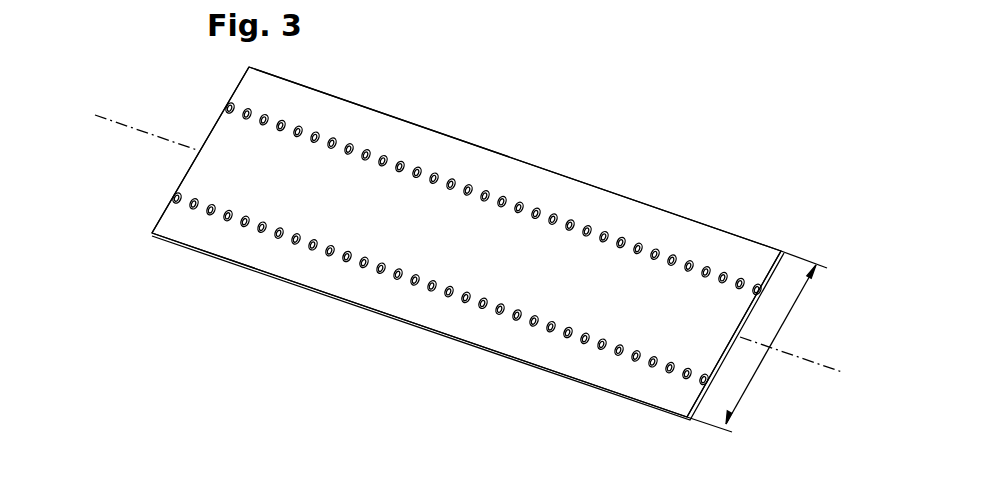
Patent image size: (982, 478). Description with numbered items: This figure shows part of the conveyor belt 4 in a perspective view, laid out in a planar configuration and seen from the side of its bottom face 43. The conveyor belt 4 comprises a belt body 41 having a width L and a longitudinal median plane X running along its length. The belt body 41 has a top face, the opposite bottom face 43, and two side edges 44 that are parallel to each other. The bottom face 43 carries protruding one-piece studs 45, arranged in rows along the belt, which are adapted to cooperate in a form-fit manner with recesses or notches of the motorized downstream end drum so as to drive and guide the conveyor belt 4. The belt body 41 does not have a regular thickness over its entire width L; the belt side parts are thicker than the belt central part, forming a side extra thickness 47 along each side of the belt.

The conveyor belt 4 is at (602, 188).
The belt body 41 is at (393, 208).
The bottom face 43 is at (458, 237).
The side edges 44 is at (667, 213).
The one-piece studs 45 is at (348, 147).
The side extra thickness 47 is at (781, 251).
The longitudinal median plane X is at (110, 120).
The width L is at (767, 350).